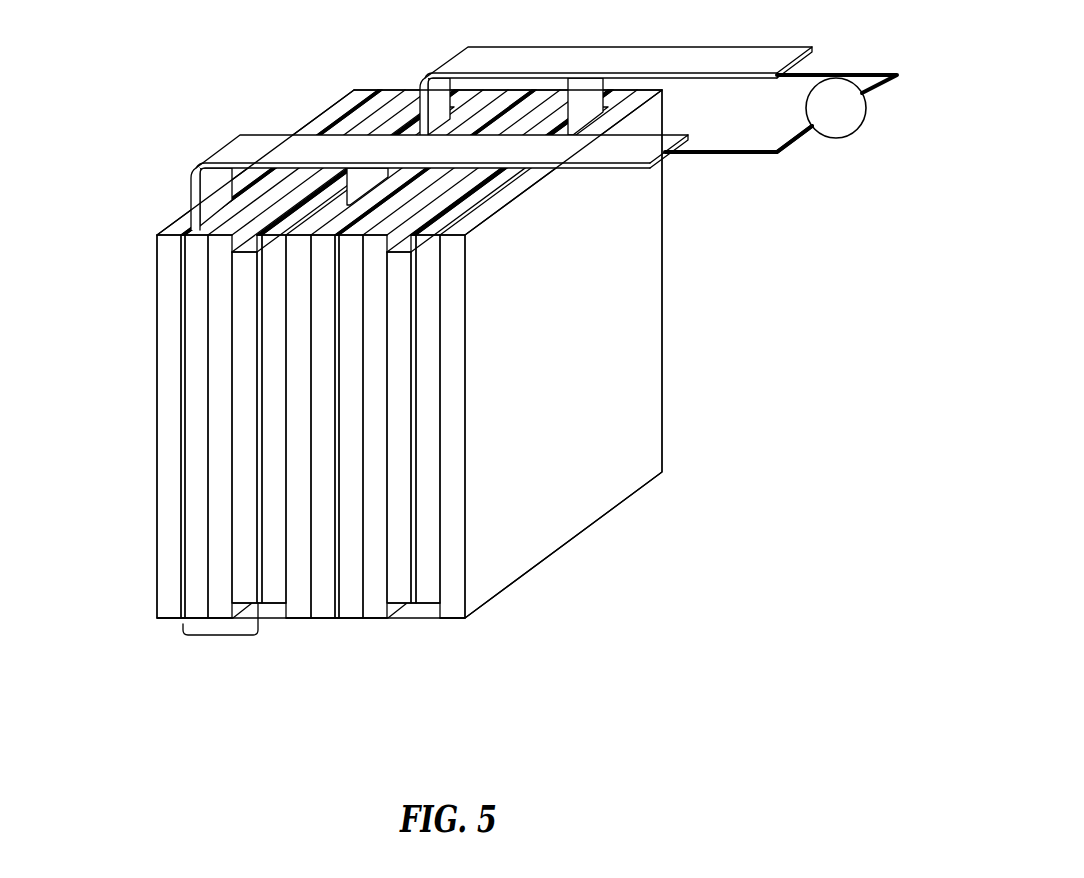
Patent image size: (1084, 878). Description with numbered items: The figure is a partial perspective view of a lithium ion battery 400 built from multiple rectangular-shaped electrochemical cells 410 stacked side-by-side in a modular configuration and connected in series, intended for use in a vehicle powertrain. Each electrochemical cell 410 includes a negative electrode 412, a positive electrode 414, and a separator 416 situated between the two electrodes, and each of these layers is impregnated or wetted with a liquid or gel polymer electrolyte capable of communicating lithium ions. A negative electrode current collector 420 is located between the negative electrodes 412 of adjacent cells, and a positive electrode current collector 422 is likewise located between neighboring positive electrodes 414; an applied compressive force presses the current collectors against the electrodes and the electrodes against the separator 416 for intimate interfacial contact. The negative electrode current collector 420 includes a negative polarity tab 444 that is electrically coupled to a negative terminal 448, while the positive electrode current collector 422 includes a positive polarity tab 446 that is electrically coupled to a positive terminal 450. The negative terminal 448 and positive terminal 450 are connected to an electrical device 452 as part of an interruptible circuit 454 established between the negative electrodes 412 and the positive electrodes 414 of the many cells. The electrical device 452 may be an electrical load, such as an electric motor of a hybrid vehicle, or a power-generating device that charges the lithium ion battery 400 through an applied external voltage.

The lithium ion battery 400 is at (176, 86).
The electrochemical cell 410 is at (217, 637).
The negative electrode 412 is at (195, 530).
The positive electrode 414 is at (273, 322).
The separator 416 is at (220, 481).
The negative electrode current collector 420 is at (182, 377).
The positive electrode current collector 422 is at (258, 353).
The negative polarity tab 444 is at (190, 198).
The positive polarity tab 446 is at (418, 112).
The negative terminal 448 is at (630, 172).
The positive terminal 450 is at (686, 80).
The electrical device 452 is at (840, 112).
The interruptible circuit 454 is at (783, 160).